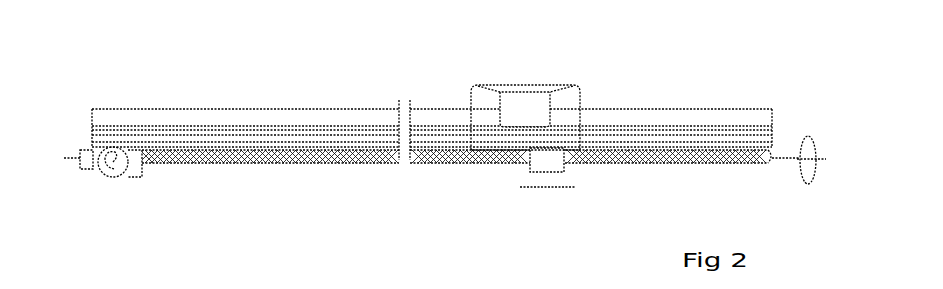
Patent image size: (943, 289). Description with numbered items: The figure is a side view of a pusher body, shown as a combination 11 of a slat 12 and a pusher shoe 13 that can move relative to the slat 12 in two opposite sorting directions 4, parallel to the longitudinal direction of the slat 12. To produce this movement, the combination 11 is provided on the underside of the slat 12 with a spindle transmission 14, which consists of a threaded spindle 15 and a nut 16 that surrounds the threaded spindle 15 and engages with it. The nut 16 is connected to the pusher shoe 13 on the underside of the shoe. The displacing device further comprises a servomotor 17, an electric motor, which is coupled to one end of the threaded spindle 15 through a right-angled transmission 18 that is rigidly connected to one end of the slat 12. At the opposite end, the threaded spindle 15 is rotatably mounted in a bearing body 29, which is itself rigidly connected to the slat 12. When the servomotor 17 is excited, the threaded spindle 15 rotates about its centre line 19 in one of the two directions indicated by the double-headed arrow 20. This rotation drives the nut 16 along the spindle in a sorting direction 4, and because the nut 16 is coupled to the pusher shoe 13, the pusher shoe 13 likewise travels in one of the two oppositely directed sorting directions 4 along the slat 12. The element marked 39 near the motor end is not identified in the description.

The combination 11 is at (700, 79).
The slat 12 is at (219, 121).
The pusher shoe 13 is at (566, 103).
The spindle transmission 14 is at (461, 181).
The threaded spindle 15 is at (276, 166).
The nut 16 is at (557, 167).
The servomotor 17 is at (119, 178).
The right-angled transmission 18 is at (147, 178).
The centre line 19 is at (789, 157).
The double-headed arrow 20 is at (826, 181).
The bearing body 29 is at (768, 165).
The bracket 39 is at (85, 170).
The sorting directions 4 is at (548, 189).